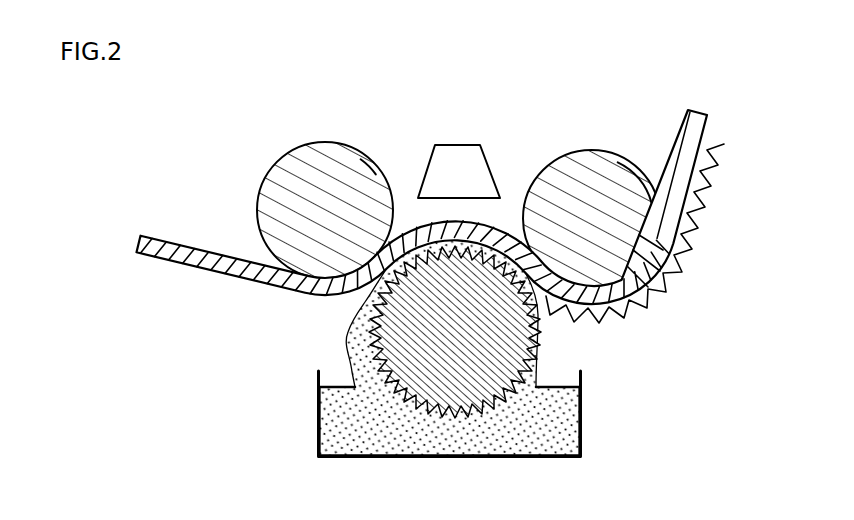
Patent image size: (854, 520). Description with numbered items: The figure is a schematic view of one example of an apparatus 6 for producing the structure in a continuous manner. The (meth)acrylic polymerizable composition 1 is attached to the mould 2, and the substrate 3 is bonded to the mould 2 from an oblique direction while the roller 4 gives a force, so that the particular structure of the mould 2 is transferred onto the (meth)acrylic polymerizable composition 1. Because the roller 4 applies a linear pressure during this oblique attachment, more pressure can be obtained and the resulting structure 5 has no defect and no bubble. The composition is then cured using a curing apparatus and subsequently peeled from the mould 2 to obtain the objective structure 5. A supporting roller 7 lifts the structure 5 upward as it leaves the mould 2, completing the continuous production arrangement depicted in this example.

The (meth)acrylic polymerizable composition 1 is at (353, 384).
The mould 2 is at (538, 357).
The substrate 3 is at (191, 236).
The roller 4 is at (324, 142).
The structure 5 is at (722, 165).
The apparatus 6 is at (460, 145).
The supporting roller 7 is at (590, 150).